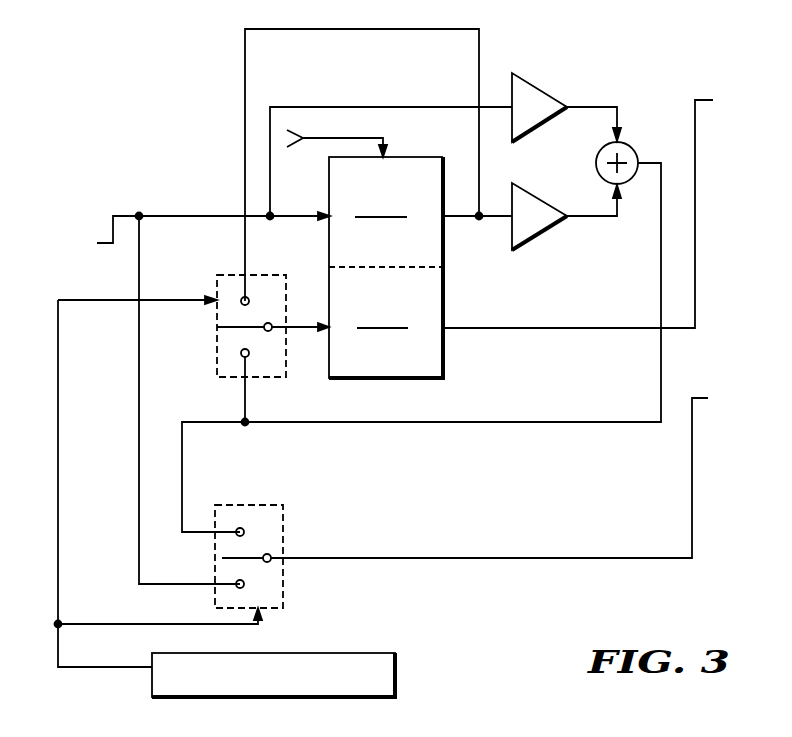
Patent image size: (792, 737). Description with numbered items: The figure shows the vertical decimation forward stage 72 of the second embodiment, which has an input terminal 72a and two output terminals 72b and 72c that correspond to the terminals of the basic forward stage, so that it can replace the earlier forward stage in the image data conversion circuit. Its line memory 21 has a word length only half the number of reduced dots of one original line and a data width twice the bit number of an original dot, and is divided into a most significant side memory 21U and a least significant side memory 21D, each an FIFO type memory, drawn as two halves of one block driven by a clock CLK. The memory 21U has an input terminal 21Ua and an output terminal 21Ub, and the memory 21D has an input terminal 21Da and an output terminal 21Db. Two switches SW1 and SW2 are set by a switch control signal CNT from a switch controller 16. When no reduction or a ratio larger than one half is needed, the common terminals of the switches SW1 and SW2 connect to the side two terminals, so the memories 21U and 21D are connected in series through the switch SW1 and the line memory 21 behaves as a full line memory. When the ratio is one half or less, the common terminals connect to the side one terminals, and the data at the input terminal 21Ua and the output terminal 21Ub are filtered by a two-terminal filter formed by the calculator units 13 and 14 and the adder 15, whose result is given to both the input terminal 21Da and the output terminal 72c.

The vertical decimation forward stage 72 is at (380, 20).
The input terminal 72a is at (100, 243).
The output terminal 72b is at (713, 100).
The output terminal 72c is at (708, 398).
The line memory 21 is at (447, 340).
The most significant side memory 21U is at (381, 204).
The least significant side memory 21D is at (382, 314).
The input terminal 21Ua is at (297, 212).
The output terminal 21Ub is at (470, 212).
The input terminal 21Da is at (298, 324).
The output terminal 21Db is at (578, 330).
The calculator unit 13 is at (548, 200).
The calculator unit 14 is at (548, 92).
The adder 15 is at (632, 147).
The switch controller 16 is at (397, 675).
The switch SW1 is at (215, 356).
The switch SW2 is at (285, 590).
The clock CLK is at (337, 133).
The switch control signal CNT is at (159, 637).